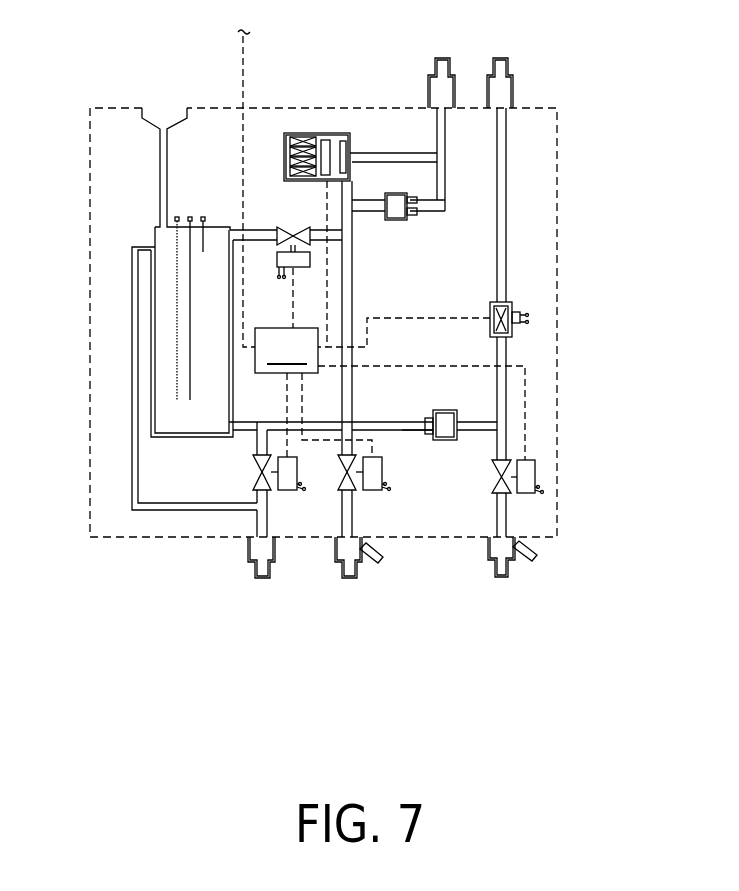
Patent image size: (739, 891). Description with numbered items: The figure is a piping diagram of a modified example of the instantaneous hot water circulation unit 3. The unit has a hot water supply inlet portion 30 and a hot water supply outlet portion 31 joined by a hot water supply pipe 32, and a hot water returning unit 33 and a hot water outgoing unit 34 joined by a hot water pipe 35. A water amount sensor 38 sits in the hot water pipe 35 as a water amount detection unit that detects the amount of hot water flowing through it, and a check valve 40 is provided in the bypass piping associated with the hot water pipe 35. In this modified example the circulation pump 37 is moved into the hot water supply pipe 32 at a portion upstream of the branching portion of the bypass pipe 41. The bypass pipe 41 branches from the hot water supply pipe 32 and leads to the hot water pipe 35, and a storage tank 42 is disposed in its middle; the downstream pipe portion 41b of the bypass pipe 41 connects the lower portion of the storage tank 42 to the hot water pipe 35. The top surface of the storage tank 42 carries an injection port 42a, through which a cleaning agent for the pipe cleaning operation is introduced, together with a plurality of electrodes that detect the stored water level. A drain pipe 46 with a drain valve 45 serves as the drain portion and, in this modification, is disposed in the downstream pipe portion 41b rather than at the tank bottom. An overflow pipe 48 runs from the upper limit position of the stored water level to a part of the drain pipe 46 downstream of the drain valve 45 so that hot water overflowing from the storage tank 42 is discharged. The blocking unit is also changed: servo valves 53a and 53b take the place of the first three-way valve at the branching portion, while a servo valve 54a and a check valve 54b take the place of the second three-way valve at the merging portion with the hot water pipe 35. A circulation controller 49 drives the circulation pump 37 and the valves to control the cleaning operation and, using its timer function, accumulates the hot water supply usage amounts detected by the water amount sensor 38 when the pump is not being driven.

The instantaneous hot water circulation unit 3 is at (557, 108).
The hot water supply inlet portion 30 is at (428, 78).
The hot water supply outlet portion 31 is at (335, 552).
The hot water supply pipe 32 is at (354, 291).
The hot water returning unit 33 is at (488, 548).
The hot water outgoing unit 34 is at (513, 78).
The hot water pipe 35 is at (507, 270).
The circulation pump 37 is at (287, 133).
The water amount sensor 38 is at (512, 305).
The check valve 40 is at (404, 222).
The bypass pipe 41 is at (270, 421).
The downstream pipe portion 41b is at (402, 432).
The storage tank 42 is at (153, 227).
The injection port 42a is at (180, 120).
The drain valve 45 is at (282, 567).
The drain pipe 46 is at (257, 527).
The overflow pipe 48 is at (132, 337).
The circulation controller 49 is at (390, 394).
The servo valve 53a is at (297, 267).
The servo valve 53b is at (383, 478).
The servo valve 54a is at (535, 468).
The check valve 54b is at (447, 410).